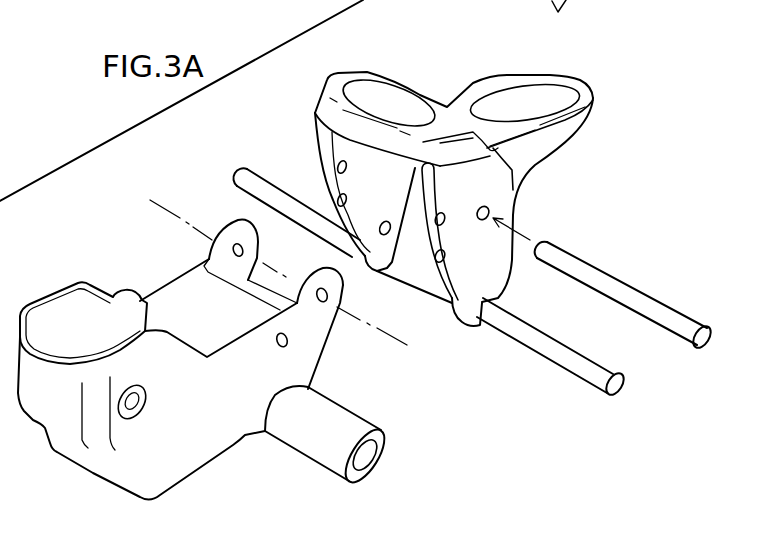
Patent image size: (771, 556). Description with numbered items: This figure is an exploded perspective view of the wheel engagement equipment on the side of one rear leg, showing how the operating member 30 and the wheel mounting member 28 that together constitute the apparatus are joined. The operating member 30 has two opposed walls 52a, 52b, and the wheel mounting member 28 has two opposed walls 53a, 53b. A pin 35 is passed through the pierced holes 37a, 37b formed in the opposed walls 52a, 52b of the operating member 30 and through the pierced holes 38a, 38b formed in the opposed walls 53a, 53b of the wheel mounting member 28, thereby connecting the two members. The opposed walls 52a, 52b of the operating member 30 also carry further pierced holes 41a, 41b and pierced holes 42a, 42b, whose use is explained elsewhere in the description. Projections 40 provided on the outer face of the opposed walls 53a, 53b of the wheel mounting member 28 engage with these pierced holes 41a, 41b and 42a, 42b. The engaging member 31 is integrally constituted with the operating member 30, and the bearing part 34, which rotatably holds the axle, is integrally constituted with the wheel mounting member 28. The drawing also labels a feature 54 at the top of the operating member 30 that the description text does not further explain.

The wheel mounting member 28 is at (152, 452).
The operating member 30 is at (578, 84).
The engaging member 31 is at (618, 386).
The bearing part 34 is at (313, 448).
The pin 35 is at (670, 318).
The pierced hole 37a is at (490, 212).
The pierced hole 37b is at (338, 162).
The pierced hole 38a is at (312, 330).
The pierced hole 38b is at (232, 224).
The projection 40 is at (287, 343).
The pierced hole 41a is at (442, 260).
The pierced hole 41b is at (380, 224).
The pierced hole 42a is at (443, 222).
The pierced hole 42b is at (338, 196).
The opposed wall 52a is at (483, 184).
The opposed wall 52b is at (372, 188).
The opposed wall 53a is at (320, 302).
The opposed wall 53b is at (207, 258).
The cup 54 is at (523, 93).